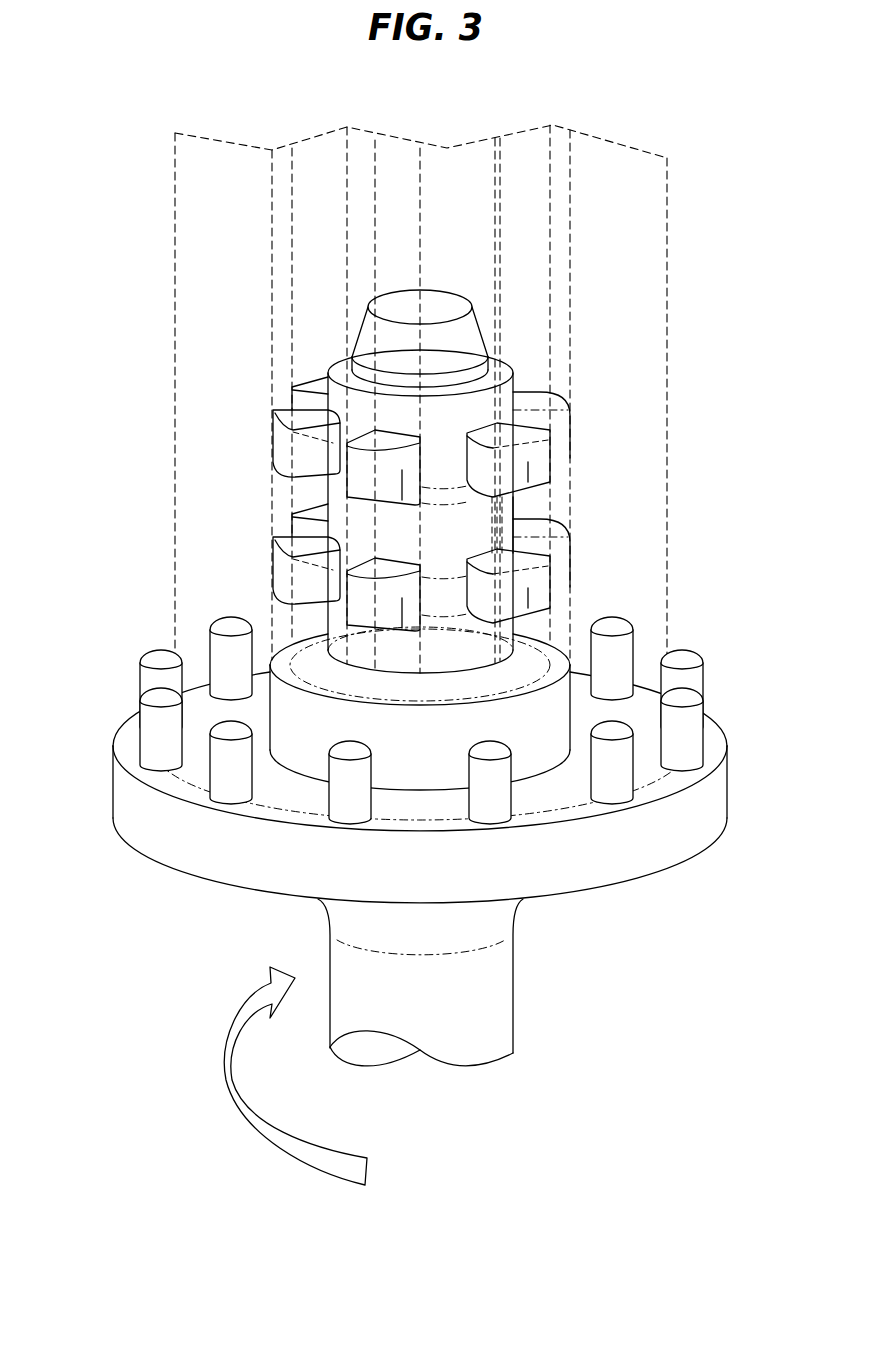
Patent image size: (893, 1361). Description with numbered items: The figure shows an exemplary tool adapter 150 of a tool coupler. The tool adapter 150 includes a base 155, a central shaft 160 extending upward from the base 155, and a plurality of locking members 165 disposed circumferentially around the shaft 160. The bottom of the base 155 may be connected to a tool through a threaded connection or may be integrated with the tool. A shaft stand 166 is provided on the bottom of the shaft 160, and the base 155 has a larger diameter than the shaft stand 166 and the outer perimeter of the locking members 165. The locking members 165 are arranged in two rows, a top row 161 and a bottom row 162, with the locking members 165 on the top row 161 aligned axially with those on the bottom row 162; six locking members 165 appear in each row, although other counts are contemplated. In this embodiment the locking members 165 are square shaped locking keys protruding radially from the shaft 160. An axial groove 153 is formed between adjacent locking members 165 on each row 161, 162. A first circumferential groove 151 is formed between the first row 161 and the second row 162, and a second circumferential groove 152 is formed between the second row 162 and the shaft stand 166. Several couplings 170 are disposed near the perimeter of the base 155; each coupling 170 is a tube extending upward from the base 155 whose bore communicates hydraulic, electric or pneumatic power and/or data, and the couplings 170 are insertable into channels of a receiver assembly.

The tool adapter 150 is at (152, 272).
The first circumferential groove 151 is at (568, 495).
The second circumferential groove 152 is at (568, 622).
The axial groove 153 is at (438, 437).
The base 155 is at (183, 842).
The central shaft 160 is at (332, 360).
The top row 161 is at (523, 458).
The bottom row 162 is at (520, 580).
The locking members 165 is at (283, 450).
The shaft stand 166 is at (312, 652).
The couplings 170 is at (157, 662).